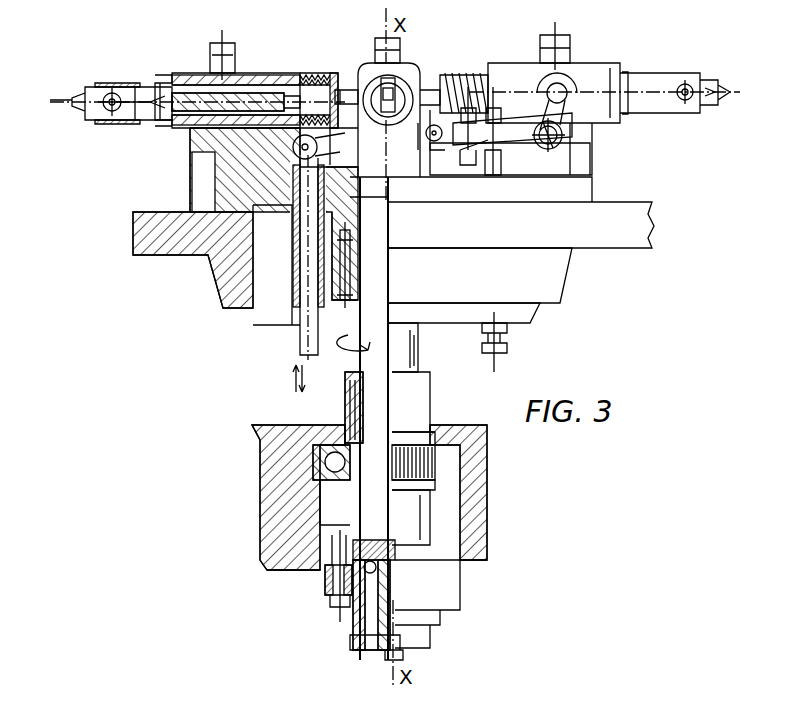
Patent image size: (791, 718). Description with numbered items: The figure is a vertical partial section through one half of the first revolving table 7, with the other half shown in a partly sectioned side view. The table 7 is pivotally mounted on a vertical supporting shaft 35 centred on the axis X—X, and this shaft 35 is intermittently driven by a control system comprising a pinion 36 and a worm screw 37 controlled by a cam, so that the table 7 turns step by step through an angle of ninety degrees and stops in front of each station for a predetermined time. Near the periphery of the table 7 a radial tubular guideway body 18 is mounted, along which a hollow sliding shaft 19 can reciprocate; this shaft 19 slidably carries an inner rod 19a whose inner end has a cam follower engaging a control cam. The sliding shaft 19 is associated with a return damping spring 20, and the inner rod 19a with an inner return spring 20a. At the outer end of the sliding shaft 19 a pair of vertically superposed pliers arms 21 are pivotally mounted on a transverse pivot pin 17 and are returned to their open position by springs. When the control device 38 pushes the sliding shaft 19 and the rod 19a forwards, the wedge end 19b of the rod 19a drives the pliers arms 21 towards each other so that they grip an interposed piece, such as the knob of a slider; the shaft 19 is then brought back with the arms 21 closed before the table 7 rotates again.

The revolving table 7 is at (620, 194).
The transverse pivot pin 17 is at (108, 110).
The tubular guideway body 18 is at (210, 184).
The hollow sliding shaft 19 is at (192, 80).
The inner rod 19a is at (222, 113).
The wedge end 19b is at (170, 128).
The return damping spring 20 is at (305, 74).
The inner return spring 20a is at (345, 58).
The pliers arms 21 is at (78, 92).
The supporting shaft 35 is at (358, 401).
The pinion 36 is at (430, 465).
The worm screw 37 is at (322, 470).
The control device 38 is at (302, 336).